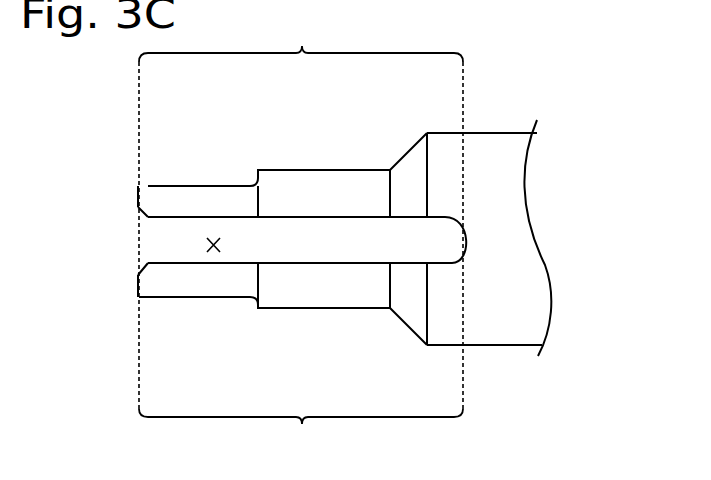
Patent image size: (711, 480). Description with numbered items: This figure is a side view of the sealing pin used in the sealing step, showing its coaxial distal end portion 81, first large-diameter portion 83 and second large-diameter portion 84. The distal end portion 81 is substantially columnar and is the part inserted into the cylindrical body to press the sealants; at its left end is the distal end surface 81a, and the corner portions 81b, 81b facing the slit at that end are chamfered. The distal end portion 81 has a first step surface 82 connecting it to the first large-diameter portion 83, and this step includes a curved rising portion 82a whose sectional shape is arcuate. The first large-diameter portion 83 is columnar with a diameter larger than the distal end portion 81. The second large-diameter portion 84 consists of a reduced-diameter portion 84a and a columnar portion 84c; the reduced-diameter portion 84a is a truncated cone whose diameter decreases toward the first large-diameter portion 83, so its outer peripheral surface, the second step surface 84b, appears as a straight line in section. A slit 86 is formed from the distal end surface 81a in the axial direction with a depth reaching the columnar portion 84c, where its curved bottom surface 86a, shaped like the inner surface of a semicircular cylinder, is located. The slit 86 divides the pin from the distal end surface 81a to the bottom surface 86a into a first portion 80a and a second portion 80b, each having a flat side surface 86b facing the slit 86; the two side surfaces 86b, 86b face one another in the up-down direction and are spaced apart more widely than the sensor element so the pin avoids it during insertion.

The first portion 80a is at (301, 42).
The second portion 80b is at (301, 433).
The distal end portion 81 is at (158, 194).
The distal end surface 81a is at (137, 193).
The corner portion 81b is at (145, 217).
The first step surface 82 is at (214, 152).
The rising portion 82a is at (251, 183).
The first large-diameter portion 83 is at (330, 178).
The second large-diameter portion 84 is at (478, 64).
The reduced-diameter portion 84a is at (407, 177).
The second step surface 84b is at (405, 163).
The columnar portion 84c is at (488, 145).
The slit 86 is at (211, 245).
The bottom surface 86a is at (457, 256).
The side surface 86b is at (342, 263).